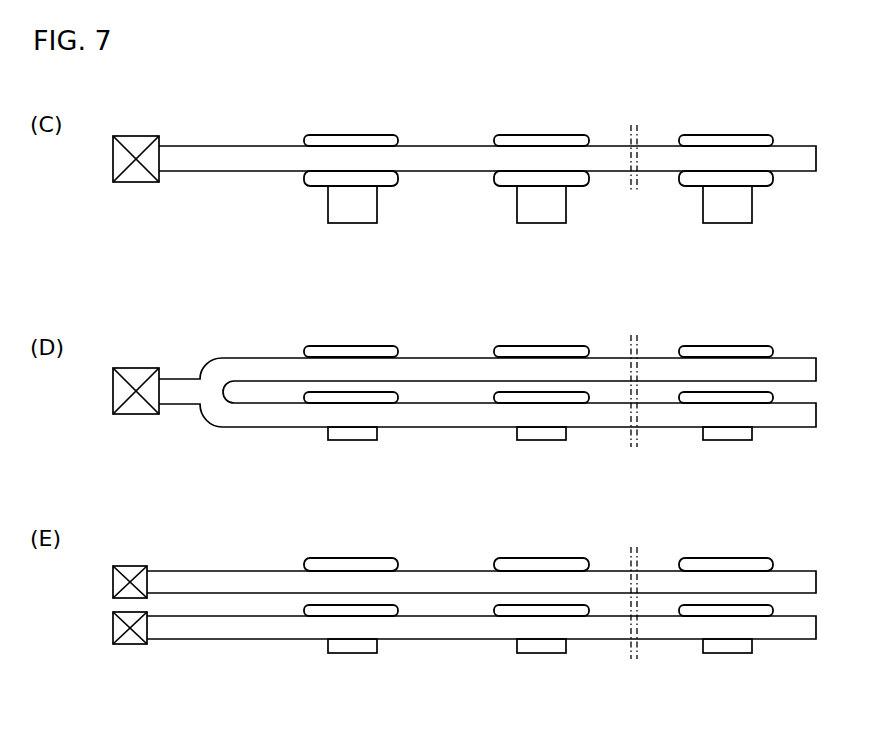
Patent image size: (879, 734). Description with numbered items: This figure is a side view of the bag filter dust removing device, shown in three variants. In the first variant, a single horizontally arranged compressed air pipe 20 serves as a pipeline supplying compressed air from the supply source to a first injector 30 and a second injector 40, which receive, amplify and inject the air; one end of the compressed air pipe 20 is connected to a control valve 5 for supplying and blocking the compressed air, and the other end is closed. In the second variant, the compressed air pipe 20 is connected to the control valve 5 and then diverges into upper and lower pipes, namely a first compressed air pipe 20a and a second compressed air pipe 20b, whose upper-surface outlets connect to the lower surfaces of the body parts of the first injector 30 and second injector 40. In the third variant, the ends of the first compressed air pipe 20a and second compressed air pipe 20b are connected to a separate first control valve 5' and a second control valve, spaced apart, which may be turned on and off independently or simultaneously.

The control valve 5 is at (136, 275).
The first control valve 5' is at (130, 667).
The compressed air pipe 20 is at (255, 171).
The first compressed air pipe 20a is at (270, 427).
The second compressed air pipe 20b is at (272, 358).
The first injector 30 is at (352, 213).
The second injector 40 is at (355, 135).